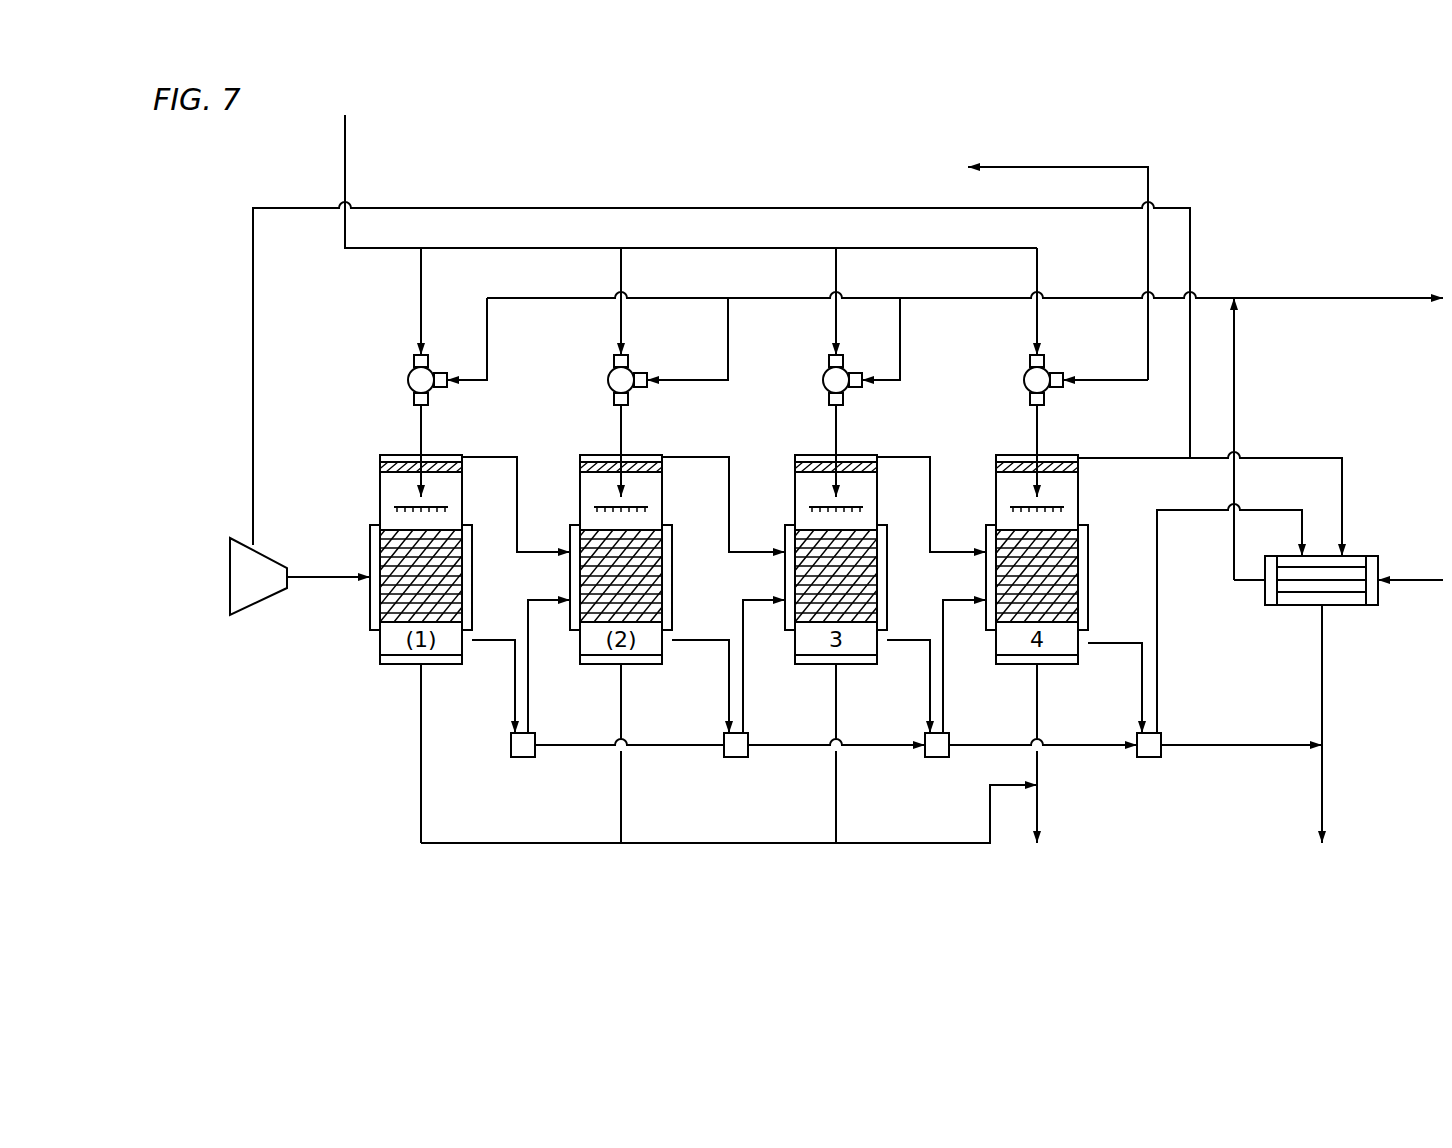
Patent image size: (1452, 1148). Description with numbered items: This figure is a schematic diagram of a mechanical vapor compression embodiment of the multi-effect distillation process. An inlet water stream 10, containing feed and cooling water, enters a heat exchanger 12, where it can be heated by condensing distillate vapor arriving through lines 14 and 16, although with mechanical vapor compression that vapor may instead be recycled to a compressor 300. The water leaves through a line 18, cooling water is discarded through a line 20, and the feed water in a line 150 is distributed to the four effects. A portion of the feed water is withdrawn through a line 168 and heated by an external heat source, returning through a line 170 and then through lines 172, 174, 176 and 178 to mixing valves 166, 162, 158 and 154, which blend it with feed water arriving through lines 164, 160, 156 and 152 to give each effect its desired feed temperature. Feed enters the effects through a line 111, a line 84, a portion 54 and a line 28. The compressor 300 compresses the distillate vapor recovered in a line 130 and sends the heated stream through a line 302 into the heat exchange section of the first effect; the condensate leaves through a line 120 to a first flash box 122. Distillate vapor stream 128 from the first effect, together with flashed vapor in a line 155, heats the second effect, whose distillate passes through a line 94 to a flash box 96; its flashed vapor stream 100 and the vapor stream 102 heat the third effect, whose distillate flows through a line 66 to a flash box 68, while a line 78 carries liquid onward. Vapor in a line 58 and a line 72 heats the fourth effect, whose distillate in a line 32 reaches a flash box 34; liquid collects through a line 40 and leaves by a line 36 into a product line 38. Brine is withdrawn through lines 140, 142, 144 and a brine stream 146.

The inlet water stream 10 is at (1390, 580).
The heat exchanger 12 is at (1325, 610).
The line 14 is at (1344, 510).
The line 16 is at (1155, 528).
The line 18 is at (1236, 370).
The line 20 is at (1400, 296).
The line 28 is at (1036, 432).
The line 32 is at (1123, 648).
The flash box 34 is at (1148, 758).
The line 36 is at (1190, 744).
The line 38 is at (1324, 660).
The line 40 is at (1065, 750).
The portion 54 is at (835, 438).
The line 58 is at (932, 520).
The line 66 is at (915, 648).
The flash box 68 is at (932, 758).
The line 72 is at (941, 625).
The line 78 is at (893, 745).
The line 84 is at (620, 432).
The line 94 is at (712, 648).
The flash box 96 is at (737, 758).
The flashed vapor stream 100 is at (740, 625).
The vapor stream 102 is at (710, 455).
The line 111 is at (423, 430).
The line 120 is at (510, 690).
The flash box 122 is at (523, 758).
The distillate vapor stream 128 is at (518, 522).
The line 130 is at (256, 370).
The line 140 is at (420, 750).
The brine stream 142 is at (622, 790).
The line 144 is at (838, 790).
The brine stream 146 is at (1040, 808).
The line 150 is at (1062, 300).
The line 152 is at (1100, 382).
The mixing valve 154 is at (1024, 380).
The line 155 is at (525, 617).
The line 156 is at (900, 378).
The mixing valve 158 is at (823, 380).
The line 160 is at (703, 378).
The mixing valve 162 is at (608, 380).
The line 164 is at (510, 296).
The mixing valve 166 is at (408, 382).
The line 168 is at (1150, 184).
The line 170 is at (347, 140).
The line 172 is at (420, 268).
The line 174 is at (622, 272).
The line 176 is at (837, 272).
The line 178 is at (1039, 272).
The compressor 300 is at (228, 548).
The line 302 is at (333, 575).